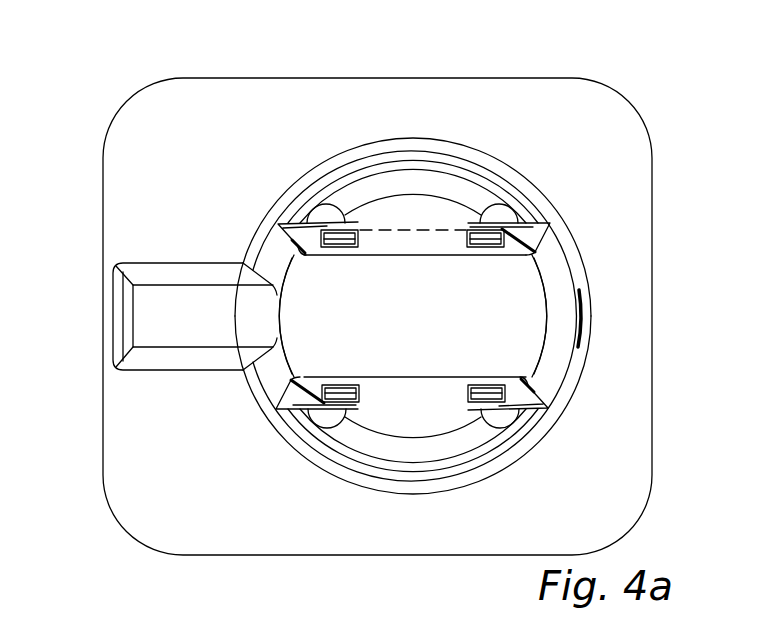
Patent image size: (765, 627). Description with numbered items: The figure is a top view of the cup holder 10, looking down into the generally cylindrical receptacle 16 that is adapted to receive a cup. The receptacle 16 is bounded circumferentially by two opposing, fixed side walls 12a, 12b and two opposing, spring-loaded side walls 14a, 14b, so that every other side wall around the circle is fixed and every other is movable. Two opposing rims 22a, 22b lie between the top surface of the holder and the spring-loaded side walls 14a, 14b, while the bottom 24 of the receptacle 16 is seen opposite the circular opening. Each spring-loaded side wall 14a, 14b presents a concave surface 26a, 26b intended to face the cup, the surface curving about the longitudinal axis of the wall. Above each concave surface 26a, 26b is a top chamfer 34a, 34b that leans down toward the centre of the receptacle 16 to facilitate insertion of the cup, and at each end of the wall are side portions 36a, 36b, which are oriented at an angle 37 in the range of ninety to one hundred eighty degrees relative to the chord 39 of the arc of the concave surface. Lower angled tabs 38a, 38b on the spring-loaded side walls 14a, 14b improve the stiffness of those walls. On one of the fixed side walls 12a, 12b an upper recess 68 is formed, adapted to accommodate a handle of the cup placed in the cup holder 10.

The cup holder 10 is at (100, 100).
The fixed side wall 12a is at (555, 283).
The fixed side wall 12b is at (252, 240).
The spring-loaded side wall 14a is at (380, 185).
The spring-loaded side wall 14b is at (398, 458).
The generally cylindrical receptacle 16 is at (430, 330).
The rim 22a is at (413, 150).
The rim 22b is at (418, 488).
The bottom 24 is at (492, 287).
The concave surface 26a is at (457, 215).
The concave surface 26b is at (468, 414).
The top chamfer 34a is at (449, 188).
The top chamfer 34b is at (465, 443).
The side portion 36a is at (298, 236).
The side portion 36b is at (297, 402).
The angle 37 is at (330, 212).
The lower angled tab 38a is at (383, 240).
The lower angled tab 38b is at (367, 410).
The chord 39 is at (425, 232).
The upper recess 68 is at (216, 326).